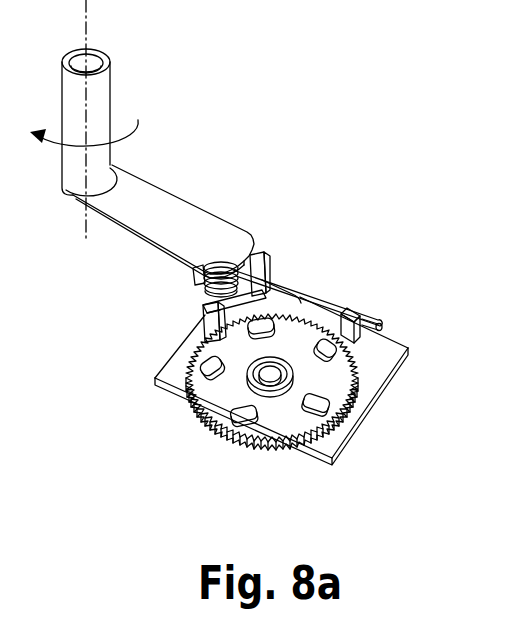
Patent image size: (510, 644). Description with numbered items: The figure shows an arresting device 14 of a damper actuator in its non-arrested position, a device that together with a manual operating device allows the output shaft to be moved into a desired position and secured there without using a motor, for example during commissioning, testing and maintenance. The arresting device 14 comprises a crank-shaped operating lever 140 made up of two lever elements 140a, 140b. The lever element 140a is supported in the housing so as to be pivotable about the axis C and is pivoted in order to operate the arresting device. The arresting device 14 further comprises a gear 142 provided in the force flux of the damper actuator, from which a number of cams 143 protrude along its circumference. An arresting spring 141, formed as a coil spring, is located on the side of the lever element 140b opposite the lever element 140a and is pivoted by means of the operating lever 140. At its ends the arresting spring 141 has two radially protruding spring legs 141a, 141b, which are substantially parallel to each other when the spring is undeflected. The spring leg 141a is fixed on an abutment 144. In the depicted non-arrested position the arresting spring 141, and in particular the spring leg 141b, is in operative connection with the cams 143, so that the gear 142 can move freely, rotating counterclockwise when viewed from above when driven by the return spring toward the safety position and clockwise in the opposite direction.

The arresting device 14 is at (197, 168).
The crank-shaped operating lever 140 is at (140, 163).
The lever element 140a is at (102, 102).
The lever element 140b is at (153, 212).
The arresting spring 141 is at (207, 283).
The spring leg 141a is at (327, 302).
The spring leg 141b is at (282, 293).
The gear 142 is at (357, 395).
The cams 143 is at (267, 320).
The abutment 144 is at (363, 323).